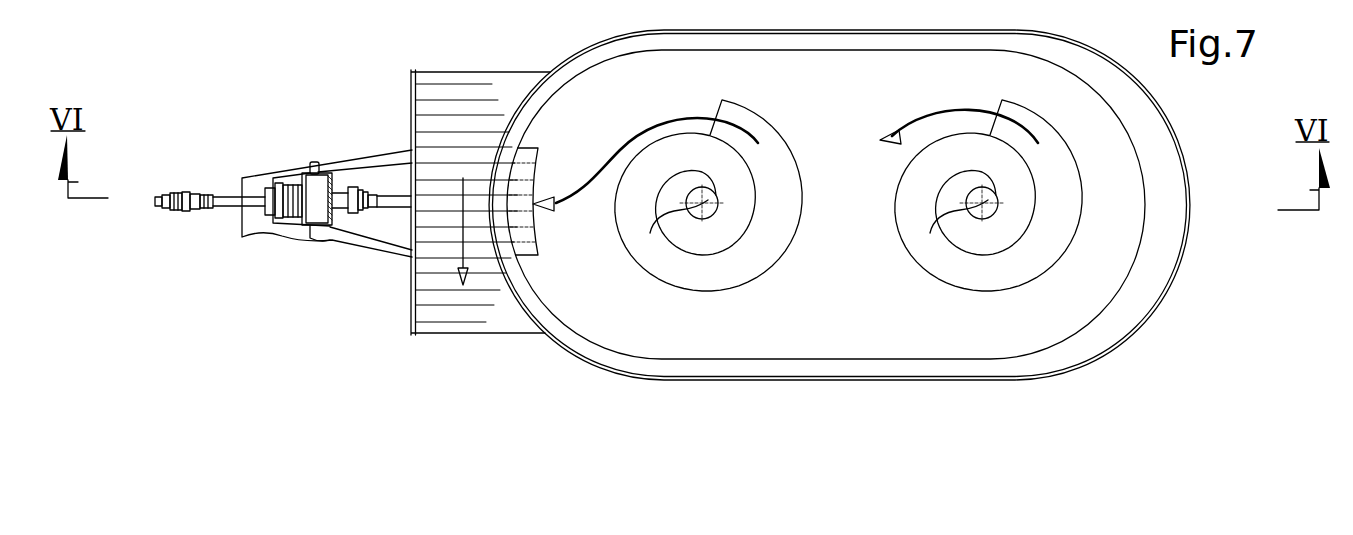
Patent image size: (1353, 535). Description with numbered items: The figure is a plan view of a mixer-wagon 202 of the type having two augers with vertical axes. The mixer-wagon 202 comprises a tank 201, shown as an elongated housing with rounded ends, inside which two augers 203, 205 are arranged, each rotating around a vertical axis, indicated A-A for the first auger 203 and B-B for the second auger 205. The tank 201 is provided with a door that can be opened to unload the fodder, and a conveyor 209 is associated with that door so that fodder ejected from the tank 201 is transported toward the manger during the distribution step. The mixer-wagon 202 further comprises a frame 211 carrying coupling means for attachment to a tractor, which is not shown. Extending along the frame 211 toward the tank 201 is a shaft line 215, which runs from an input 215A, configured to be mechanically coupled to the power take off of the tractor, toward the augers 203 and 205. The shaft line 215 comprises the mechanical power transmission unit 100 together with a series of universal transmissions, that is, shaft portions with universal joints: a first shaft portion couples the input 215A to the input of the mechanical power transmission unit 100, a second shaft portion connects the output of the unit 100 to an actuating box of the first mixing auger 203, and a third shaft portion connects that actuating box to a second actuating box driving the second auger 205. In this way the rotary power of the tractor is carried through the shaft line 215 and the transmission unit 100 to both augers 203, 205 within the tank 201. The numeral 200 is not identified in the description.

The mechanical power transmission unit 100 is at (312, 172).
The housing 200 is at (472, 304).
The tank 201 is at (1130, 218).
The mixer-wagon 202 is at (878, 378).
The auger 203 is at (767, 192).
The auger 205 is at (1041, 197).
The conveyor 209 is at (480, 80).
The frame 211 is at (380, 162).
The shaft line 215 is at (388, 212).
The input 215A is at (188, 198).